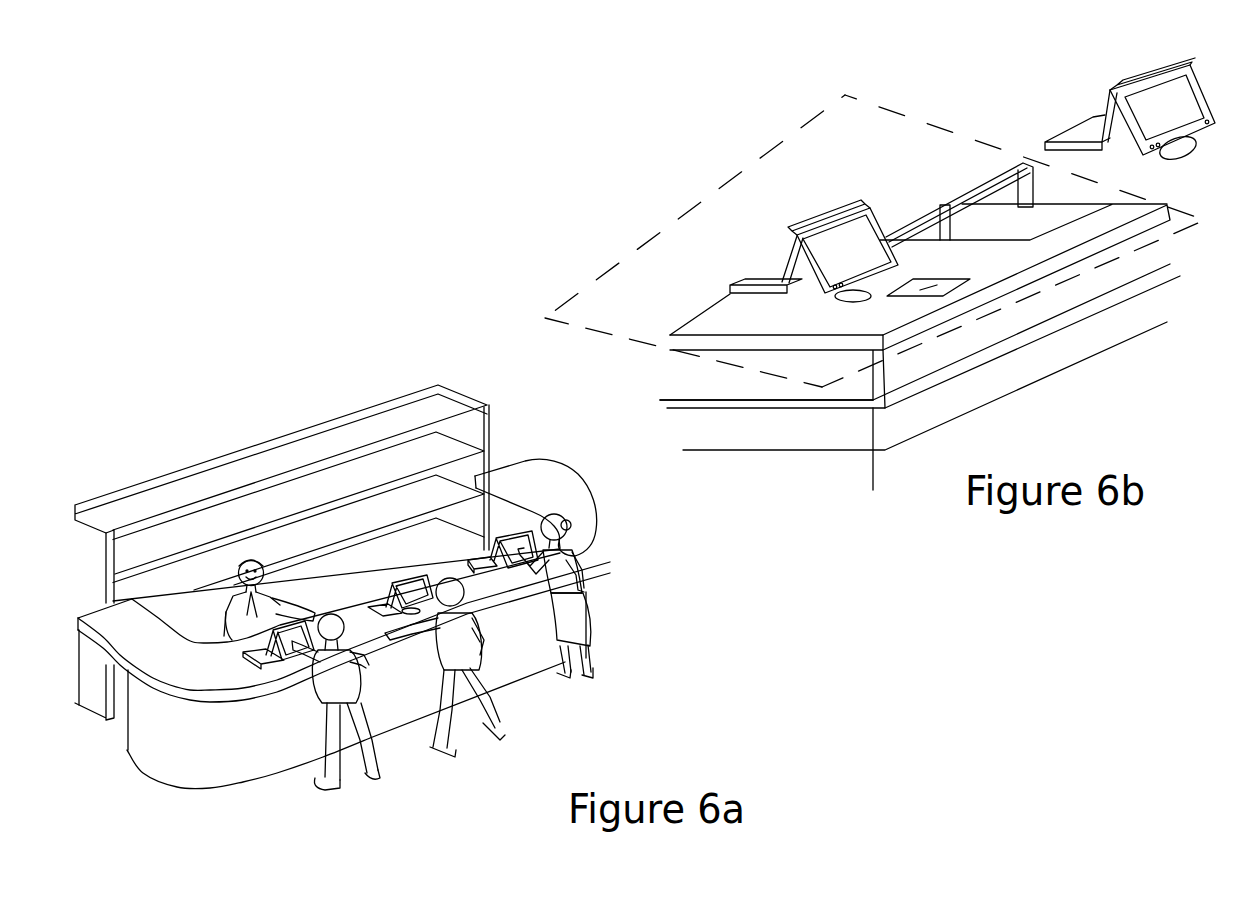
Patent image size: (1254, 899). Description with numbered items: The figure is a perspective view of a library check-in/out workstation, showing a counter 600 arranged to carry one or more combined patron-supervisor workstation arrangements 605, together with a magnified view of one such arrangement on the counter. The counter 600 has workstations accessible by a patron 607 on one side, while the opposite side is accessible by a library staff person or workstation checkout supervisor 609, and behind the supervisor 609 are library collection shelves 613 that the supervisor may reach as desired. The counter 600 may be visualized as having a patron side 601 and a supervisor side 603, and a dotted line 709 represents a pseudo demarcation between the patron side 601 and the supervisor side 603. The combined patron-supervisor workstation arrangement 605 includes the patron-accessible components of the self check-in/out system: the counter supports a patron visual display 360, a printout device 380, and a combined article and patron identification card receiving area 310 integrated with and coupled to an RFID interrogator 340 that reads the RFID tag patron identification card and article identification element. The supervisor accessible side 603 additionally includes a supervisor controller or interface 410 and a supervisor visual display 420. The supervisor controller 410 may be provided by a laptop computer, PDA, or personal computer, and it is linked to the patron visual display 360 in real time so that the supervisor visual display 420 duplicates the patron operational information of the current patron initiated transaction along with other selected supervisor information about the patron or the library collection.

In FIG. 6A, the counter 600 is at (583, 505).
In FIG. 6B, the counter 600 is at (690, 327).
In FIG. 6B, the patron side 601 is at (1102, 295).
In FIG. 6B, the supervisor side 603 is at (642, 169).
In FIG. 6A, the combined patron-supervisor workstation arrangement 605 is at (267, 740).
In FIG. 6B, the combined patron-supervisor workstation arrangement 605 is at (738, 170).
In FIG. 6A, the patron 607 is at (567, 583).
In FIG. 6A, the workstation checkout supervisor 609 is at (237, 603).
In FIG. 6A, the library collection shelves 613 is at (442, 402).
In FIG. 6B, the dotted line 709 is at (780, 313).
In FIG. 6B, the combined article and patron identification card receiving area 310 is at (960, 152).
In FIG. 6B, the RFID interrogator 340 is at (993, 168).
In FIG. 6B, the patron visual display 360 is at (893, 240).
In FIG. 6B, the printout device 380 is at (950, 283).
In FIG. 6B, the supervisor controller 410 is at (771, 282).
In FIG. 6B, the supervisor visual display 420 is at (797, 235).